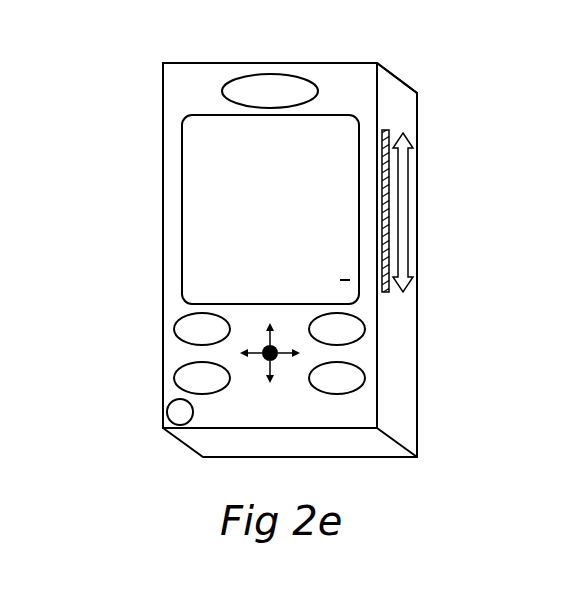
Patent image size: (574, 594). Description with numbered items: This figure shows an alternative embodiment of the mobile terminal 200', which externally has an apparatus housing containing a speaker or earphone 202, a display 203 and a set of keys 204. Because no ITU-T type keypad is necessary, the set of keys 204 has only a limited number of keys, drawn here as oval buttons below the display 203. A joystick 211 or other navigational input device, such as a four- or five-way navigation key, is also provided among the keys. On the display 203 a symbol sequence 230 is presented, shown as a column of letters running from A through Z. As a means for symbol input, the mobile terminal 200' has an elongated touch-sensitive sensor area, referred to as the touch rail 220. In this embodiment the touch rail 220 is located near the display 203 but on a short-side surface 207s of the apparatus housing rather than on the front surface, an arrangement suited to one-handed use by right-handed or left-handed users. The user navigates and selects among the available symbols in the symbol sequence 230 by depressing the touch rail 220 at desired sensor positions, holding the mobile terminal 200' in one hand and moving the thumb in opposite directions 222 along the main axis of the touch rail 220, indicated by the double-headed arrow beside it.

The mobile terminal 200' is at (236, 245).
The speaker or earphone 202 is at (259, 86).
The display 203 is at (189, 178).
The symbol sequence 230 is at (338, 156).
The short-side surface 207s is at (395, 86).
The touch rail 220 is at (416, 124).
The opposite directions 222 is at (409, 172).
The set of keys 204 is at (150, 347).
The joystick 211 is at (260, 378).